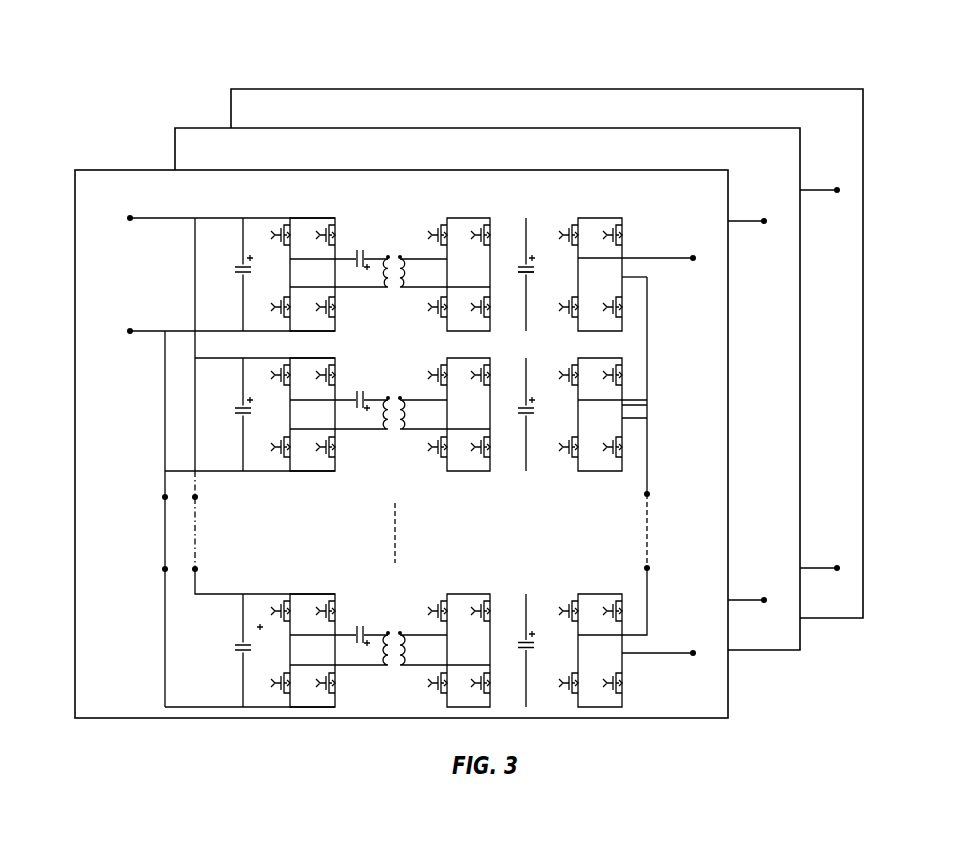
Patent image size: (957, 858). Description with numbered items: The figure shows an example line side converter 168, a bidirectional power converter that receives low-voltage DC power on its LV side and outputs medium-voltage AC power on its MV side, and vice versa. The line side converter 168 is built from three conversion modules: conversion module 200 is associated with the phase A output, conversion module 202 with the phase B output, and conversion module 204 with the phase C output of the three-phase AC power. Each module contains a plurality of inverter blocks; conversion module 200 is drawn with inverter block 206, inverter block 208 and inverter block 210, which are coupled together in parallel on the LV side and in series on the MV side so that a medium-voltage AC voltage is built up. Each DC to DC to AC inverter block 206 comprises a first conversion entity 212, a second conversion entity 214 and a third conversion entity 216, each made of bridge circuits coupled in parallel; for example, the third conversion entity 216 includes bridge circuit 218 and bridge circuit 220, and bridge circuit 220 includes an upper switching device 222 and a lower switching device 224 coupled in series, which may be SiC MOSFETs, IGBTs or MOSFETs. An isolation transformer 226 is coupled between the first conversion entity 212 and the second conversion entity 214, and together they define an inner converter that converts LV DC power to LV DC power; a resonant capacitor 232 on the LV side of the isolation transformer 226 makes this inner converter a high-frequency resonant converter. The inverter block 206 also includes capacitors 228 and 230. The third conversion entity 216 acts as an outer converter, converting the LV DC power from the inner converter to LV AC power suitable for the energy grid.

The line side converter 168 is at (686, 56).
The conversion module 200 is at (74, 197).
The conversion module 202 is at (199, 128).
The conversion module 204 is at (249, 89).
The inverter block 206 is at (210, 217).
The inverter block 208 is at (225, 473).
The inverter block 210 is at (222, 592).
The first conversion entity 212 is at (342, 211).
The second conversion entity 214 is at (500, 211).
The third conversion entity 216 is at (628, 211).
The bridge circuit 218 is at (557, 260).
The bridge circuit 220 is at (626, 255).
The upper switching device 222 is at (626, 232).
The lower switching device 224 is at (622, 300).
The isolation transformer 226 is at (384, 290).
The capacitor 228 is at (243, 271).
The capacitor 230 is at (527, 274).
The resonant capacitor 232 is at (360, 251).